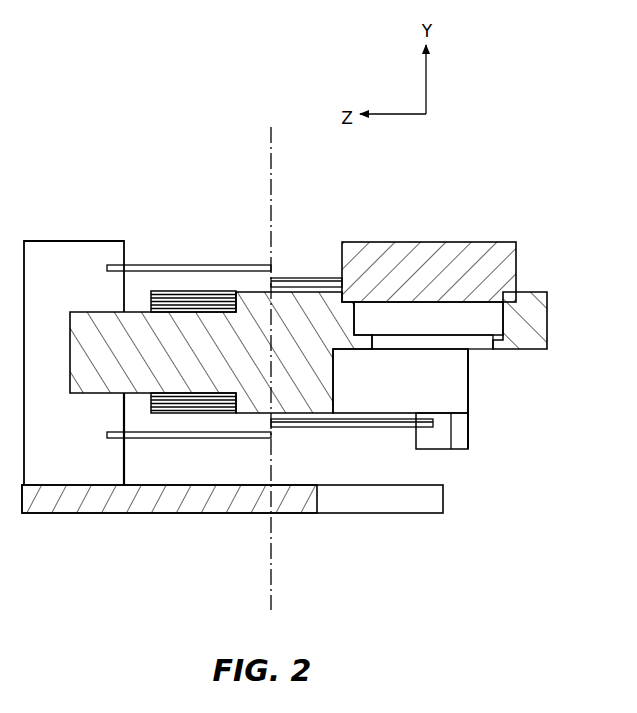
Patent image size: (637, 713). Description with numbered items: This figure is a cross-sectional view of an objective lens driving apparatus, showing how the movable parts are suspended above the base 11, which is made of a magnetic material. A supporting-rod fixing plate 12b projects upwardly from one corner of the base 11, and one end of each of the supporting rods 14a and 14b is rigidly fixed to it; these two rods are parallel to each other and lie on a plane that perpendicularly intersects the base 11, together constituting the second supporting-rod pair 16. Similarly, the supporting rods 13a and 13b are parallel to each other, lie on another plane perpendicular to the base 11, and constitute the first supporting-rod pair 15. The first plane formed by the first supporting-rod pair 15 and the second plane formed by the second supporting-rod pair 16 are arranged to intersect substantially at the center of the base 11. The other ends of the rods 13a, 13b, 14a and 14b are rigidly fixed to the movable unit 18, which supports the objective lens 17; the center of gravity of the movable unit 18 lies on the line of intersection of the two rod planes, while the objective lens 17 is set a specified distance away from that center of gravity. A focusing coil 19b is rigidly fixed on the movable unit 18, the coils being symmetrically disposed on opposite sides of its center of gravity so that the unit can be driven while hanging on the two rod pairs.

The base 11 is at (180, 507).
The supporting-rod fixing plate 12b is at (52, 243).
The supporting rod 13a is at (295, 275).
The supporting rod 13b is at (352, 428).
The supporting rod 14a is at (150, 263).
The supporting rod 14b is at (175, 440).
The first supporting-rod pair 15 is at (306, 236).
The second supporting-rod pair 16 is at (189, 249).
The objective lens 17 is at (425, 247).
The movable unit 18 is at (548, 318).
The focusing coil 19b is at (220, 414).